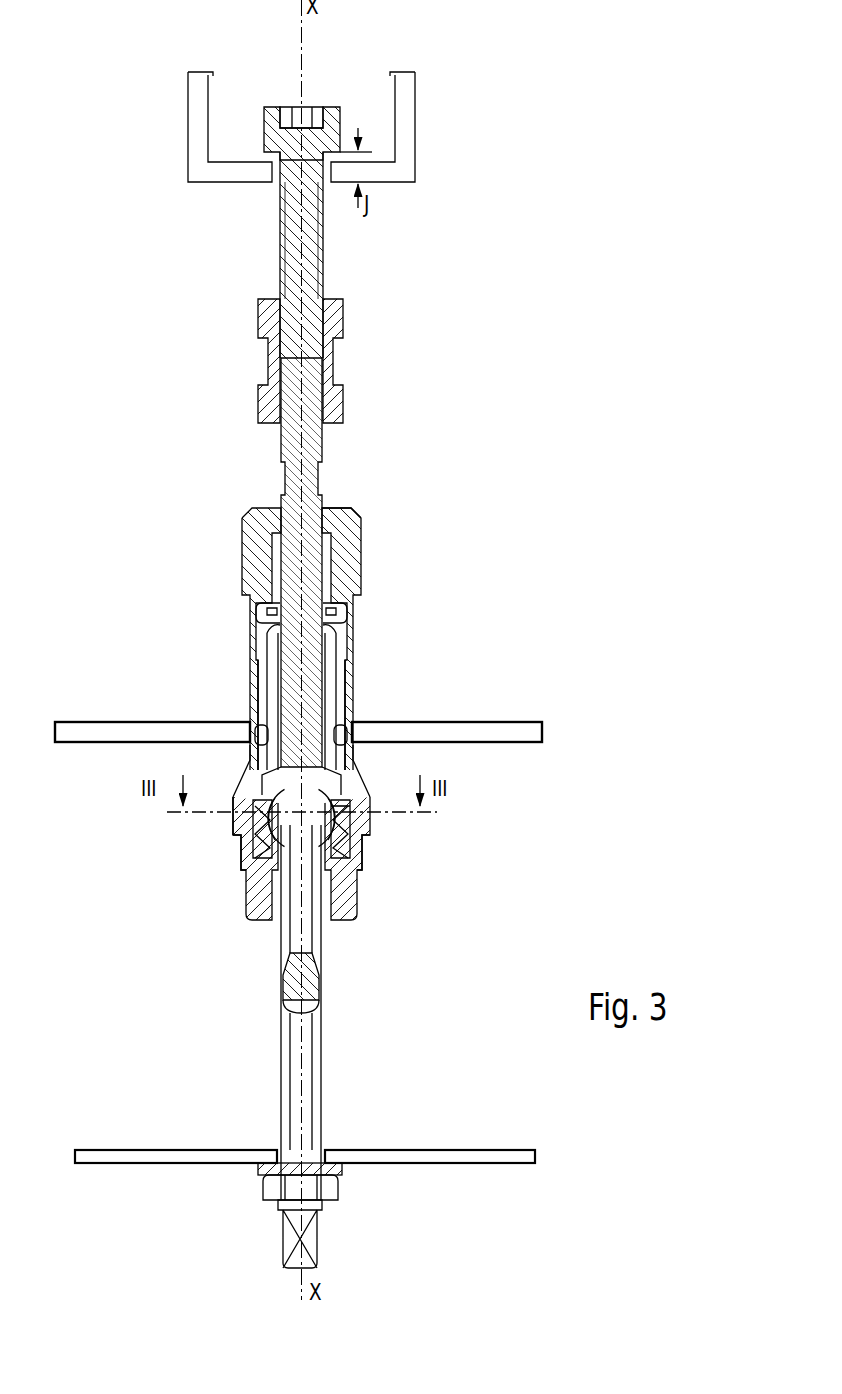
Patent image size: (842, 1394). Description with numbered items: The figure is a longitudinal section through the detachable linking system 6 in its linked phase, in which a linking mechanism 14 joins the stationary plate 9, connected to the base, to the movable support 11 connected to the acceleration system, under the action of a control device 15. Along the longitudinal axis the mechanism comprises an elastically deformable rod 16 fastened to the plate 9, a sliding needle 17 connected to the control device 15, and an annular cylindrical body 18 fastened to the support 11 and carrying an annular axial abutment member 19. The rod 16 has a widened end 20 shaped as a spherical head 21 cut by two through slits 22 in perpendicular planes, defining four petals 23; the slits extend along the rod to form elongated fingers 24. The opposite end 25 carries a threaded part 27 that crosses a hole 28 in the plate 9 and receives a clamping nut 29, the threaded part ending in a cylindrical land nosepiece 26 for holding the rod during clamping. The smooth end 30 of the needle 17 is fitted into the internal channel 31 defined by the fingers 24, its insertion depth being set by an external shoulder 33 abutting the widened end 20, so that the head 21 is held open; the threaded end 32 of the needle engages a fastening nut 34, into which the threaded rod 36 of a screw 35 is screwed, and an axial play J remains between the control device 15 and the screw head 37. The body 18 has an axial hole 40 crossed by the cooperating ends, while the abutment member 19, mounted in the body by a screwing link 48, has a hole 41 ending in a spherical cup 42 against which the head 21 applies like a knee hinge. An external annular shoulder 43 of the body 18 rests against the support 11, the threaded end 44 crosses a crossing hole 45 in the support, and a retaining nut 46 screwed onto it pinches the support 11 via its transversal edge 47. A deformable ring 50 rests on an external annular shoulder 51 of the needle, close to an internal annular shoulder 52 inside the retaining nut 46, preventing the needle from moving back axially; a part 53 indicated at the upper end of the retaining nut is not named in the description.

The detachable linking system 6 is at (590, 86).
The stationary plate 9 is at (490, 1155).
The movable support 11 is at (518, 732).
The linking mechanism 14 is at (163, 461).
The control device 15 is at (181, 109).
The elastically deformable rod 16 is at (271, 979).
The sliding needle 17 is at (281, 648).
The annular cylindrical body 18 is at (229, 833).
The annular axial abutment member 19 is at (242, 901).
The widened end 20 is at (341, 830).
The spherical head 21 is at (342, 813).
The through slits 22 is at (302, 918).
The petals 23 is at (245, 848).
The elongated fingers 24 is at (317, 897).
The opposite end 25 is at (271, 1090).
The cylindrical land nosepiece 26 is at (312, 1248).
The threaded part 27 is at (320, 1122).
The hole 28 is at (262, 1163).
The clamping nut 29 is at (277, 1190).
The smooth end 30 is at (328, 808).
The cylindrical internal channel 31 is at (264, 806).
The threaded end 32 is at (310, 428).
The external shoulder 33 is at (348, 745).
The fastening nut 34 is at (260, 369).
The screw 35 is at (274, 233).
The threaded rod 36 is at (310, 290).
The head 37 is at (265, 118).
The axial hole 40 is at (230, 812).
The axial hole 41 is at (344, 856).
The spherical cup 42 is at (240, 866).
The external annular shoulder 43 is at (255, 745).
The threaded end 44 is at (347, 682).
The crossing hole 45 is at (260, 728).
The retaining nut 46 is at (236, 577).
The transversal edge 47 is at (344, 716).
The screwing link 48 is at (360, 847).
The ring 50 is at (268, 610).
The external annular shoulder 51 is at (332, 650).
The internal annular shoulder 52 is at (345, 600).
The housing chamfer 53 is at (335, 520).